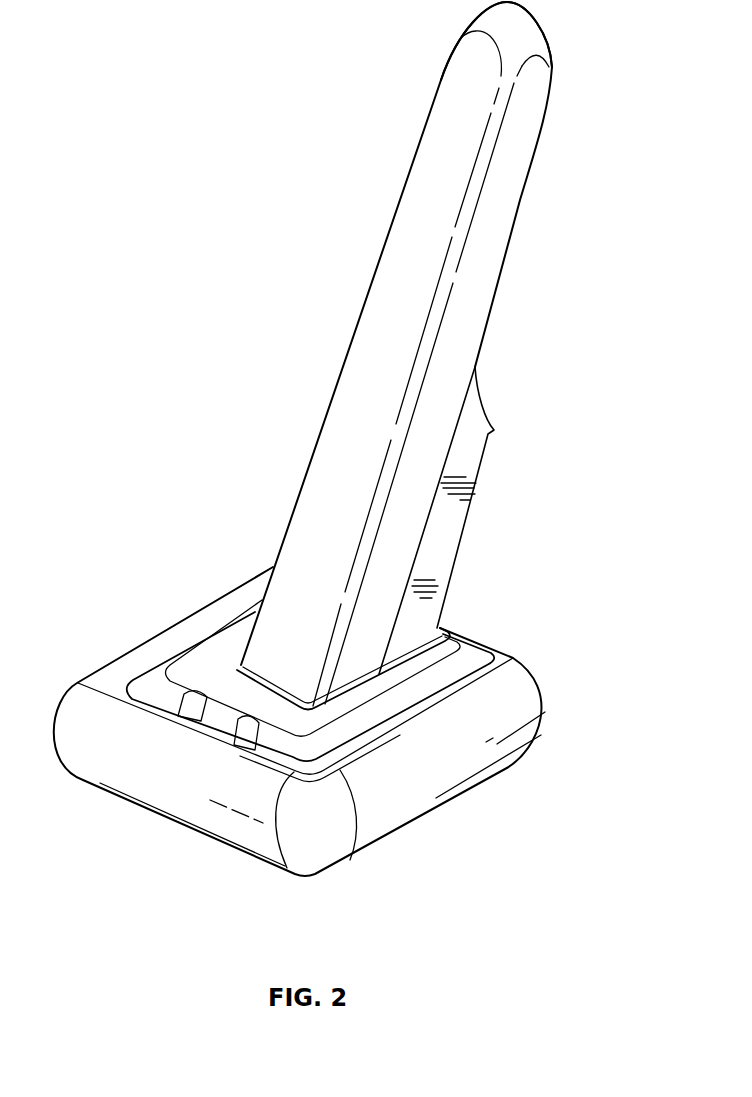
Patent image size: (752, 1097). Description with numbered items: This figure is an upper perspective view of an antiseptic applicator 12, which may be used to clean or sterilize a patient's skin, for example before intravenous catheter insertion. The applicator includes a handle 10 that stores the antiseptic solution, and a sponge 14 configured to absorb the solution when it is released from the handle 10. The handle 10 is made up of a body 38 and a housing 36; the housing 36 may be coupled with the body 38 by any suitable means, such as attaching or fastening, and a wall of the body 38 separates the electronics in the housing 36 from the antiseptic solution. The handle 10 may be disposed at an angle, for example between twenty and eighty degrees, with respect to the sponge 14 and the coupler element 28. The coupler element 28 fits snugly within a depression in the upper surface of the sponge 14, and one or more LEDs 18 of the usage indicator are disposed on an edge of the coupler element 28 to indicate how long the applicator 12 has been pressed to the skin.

The handle 10 is at (526, 347).
The antiseptic applicator 12 is at (274, 130).
The sponge 14 is at (520, 681).
The LEDs 18 is at (246, 745).
The coupler element 28 is at (453, 653).
The housing 36 is at (478, 441).
The body 38 is at (457, 126).